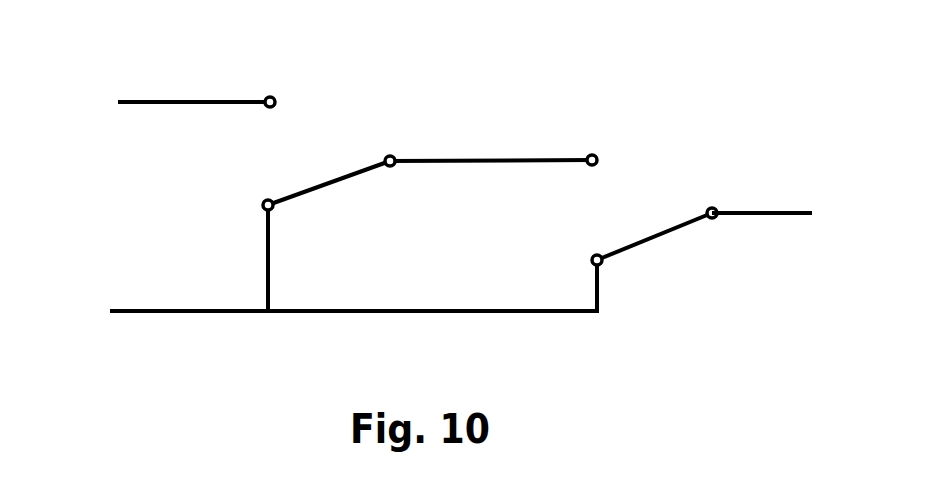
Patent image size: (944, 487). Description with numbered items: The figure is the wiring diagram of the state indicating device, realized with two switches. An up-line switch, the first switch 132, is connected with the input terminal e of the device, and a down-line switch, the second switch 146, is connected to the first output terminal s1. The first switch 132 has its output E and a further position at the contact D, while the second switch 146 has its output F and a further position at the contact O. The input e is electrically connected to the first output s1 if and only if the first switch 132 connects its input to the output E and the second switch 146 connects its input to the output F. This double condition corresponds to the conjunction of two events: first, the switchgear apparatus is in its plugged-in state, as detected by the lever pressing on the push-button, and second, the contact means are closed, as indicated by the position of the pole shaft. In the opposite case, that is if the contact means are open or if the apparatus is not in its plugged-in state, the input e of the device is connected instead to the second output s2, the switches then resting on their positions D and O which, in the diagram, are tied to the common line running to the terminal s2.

The second switch 146 is at (449, 162).
The first switch 132 is at (718, 194).
The output of the second switch F is at (286, 72).
The contact O is at (292, 229).
The output of the first switch E is at (611, 130).
The contact D is at (615, 282).
The input terminal e is at (776, 223).
The first output terminal s1 is at (158, 105).
The second output terminal s2 is at (319, 311).